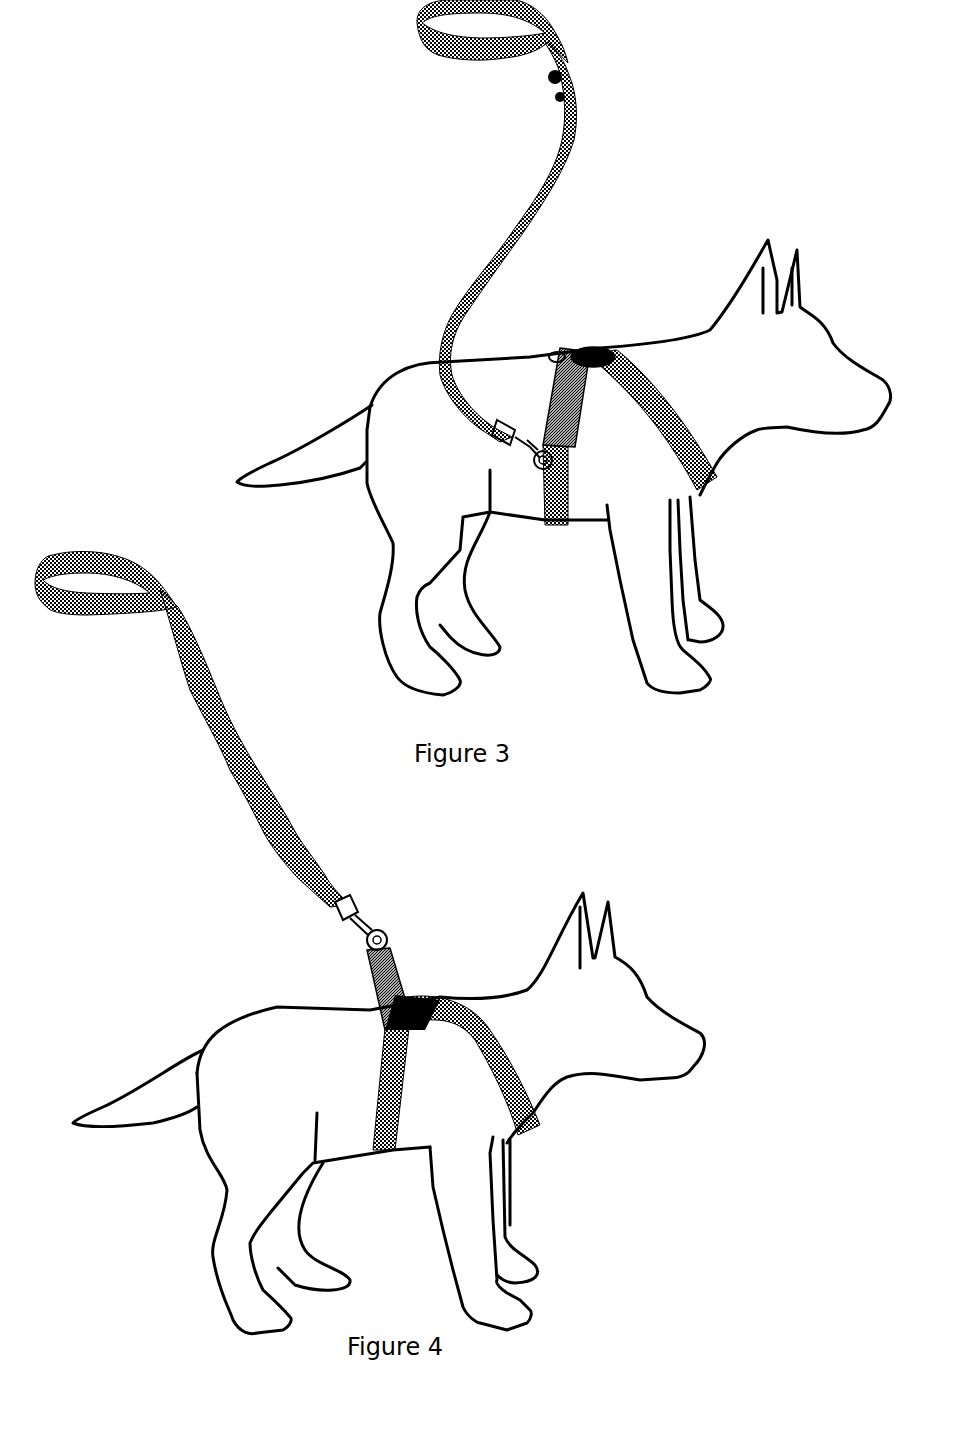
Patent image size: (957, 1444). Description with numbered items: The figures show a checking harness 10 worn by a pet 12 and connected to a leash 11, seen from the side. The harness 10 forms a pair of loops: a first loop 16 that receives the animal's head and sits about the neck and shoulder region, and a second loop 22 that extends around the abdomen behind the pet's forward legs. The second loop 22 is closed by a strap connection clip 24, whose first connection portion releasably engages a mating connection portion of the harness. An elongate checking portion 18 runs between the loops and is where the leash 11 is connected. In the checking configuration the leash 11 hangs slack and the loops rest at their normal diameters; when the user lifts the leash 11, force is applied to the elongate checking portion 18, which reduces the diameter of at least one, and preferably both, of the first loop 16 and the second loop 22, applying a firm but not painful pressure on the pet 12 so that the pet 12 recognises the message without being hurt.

In FIG. 3, the checking harness 10 is at (628, 415).
In FIG. 4, the checking harness 10 is at (485, 1079).
In FIG. 3, the leash 11 is at (548, 133).
In FIG. 4, the leash 11 is at (264, 835).
In FIG. 3, the pet 12 is at (403, 357).
In FIG. 4, the pet 12 is at (652, 975).
In FIG. 3, the first loop 16 is at (716, 487).
In FIG. 4, the first loop 16 is at (540, 1127).
In FIG. 3, the elongate checking portion 18 is at (556, 398).
In FIG. 4, the elongate checking portion 18 is at (402, 973).
In FIG. 3, the second loop 22 is at (550, 531).
In FIG. 4, the second loop 22 is at (382, 1160).
In FIG. 3, the strap connection clip 24 is at (589, 342).